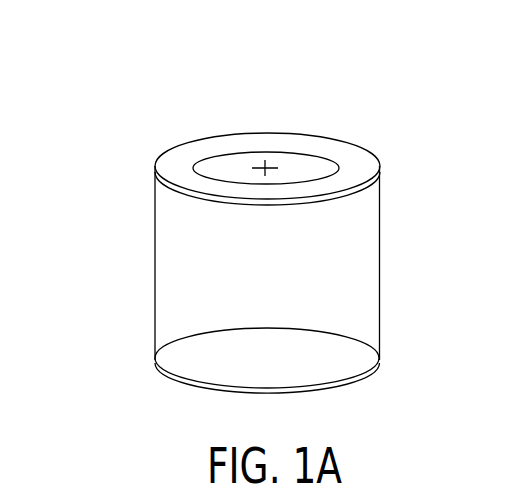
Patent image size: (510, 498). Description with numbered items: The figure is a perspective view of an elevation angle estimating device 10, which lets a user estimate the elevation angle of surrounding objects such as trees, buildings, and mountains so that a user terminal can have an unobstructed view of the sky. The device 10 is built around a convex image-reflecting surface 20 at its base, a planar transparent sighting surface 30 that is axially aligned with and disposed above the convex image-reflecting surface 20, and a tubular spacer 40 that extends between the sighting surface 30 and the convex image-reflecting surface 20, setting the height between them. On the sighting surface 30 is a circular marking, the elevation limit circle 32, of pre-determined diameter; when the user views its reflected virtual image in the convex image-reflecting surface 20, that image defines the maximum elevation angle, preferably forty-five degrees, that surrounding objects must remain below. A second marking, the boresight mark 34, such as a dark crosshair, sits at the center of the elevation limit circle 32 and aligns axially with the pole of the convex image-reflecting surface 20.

The elevation angle estimating device 10 is at (203, 98).
The convex image-reflecting surface 20 is at (173, 351).
The planar transparent sighting surface 30 is at (175, 159).
The elevation limit circle 32 is at (347, 167).
The boresight mark 34 is at (266, 166).
The tubular spacer 40 is at (154, 259).